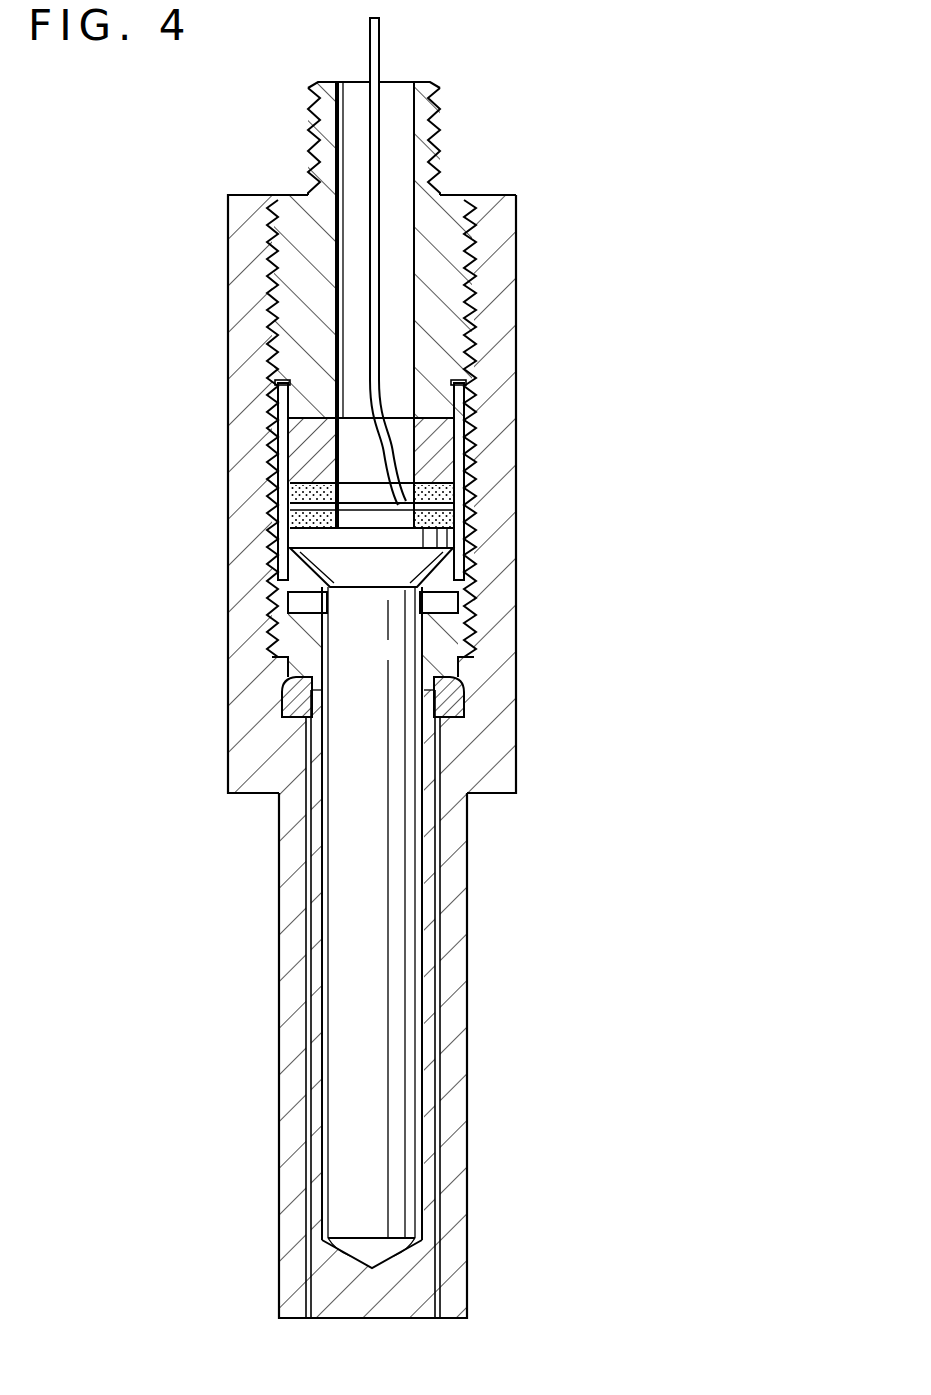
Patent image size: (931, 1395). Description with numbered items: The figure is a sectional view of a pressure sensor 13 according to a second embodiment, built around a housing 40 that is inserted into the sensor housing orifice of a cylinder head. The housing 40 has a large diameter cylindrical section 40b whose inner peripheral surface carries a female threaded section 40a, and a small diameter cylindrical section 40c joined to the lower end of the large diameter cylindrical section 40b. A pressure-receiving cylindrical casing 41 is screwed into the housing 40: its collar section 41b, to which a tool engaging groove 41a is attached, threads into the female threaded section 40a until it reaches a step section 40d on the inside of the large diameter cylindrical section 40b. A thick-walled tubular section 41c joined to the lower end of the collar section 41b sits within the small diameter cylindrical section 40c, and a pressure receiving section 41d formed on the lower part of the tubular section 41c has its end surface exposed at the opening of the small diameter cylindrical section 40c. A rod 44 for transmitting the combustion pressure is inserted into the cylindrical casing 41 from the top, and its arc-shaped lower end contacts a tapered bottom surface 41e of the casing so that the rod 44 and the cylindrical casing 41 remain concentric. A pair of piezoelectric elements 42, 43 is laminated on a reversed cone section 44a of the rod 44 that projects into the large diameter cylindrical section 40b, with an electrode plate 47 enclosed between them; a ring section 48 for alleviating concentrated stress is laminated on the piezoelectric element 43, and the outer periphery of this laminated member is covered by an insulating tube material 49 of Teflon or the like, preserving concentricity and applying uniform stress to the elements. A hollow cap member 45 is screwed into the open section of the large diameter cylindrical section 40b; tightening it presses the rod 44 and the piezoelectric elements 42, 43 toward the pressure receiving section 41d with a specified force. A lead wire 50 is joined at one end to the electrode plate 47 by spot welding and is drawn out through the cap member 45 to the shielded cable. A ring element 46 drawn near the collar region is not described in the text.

The pressure sensor 13 is at (394, 668).
The housing 40 is at (518, 250).
The female threaded section 40a is at (472, 584).
The large diameter cylindrical section 40b is at (516, 362).
The small diameter cylindrical section 40c is at (455, 1143).
The step section 40d is at (292, 700).
The pressure-receiving cylindrical casing 41 is at (425, 975).
The tool engaging groove 41a is at (270, 600).
The collar section 41b is at (455, 642).
The thick-walled tubular section 41c is at (432, 876).
The pressure receiving section 41d is at (420, 1288).
The tapered bottom surface 41e is at (320, 1245).
The piezoelectric element 42 is at (300, 520).
The piezoelectric element 43 is at (298, 483).
The rod 44 is at (340, 990).
The reversed cone section 44a is at (462, 576).
The cap member 45 is at (267, 283).
The packing ring 46 is at (453, 692).
The electrode plate 47 is at (298, 500).
The ring section 48 is at (297, 438).
The insulating tube material 49 is at (445, 440).
The lead wire 50 is at (383, 306).